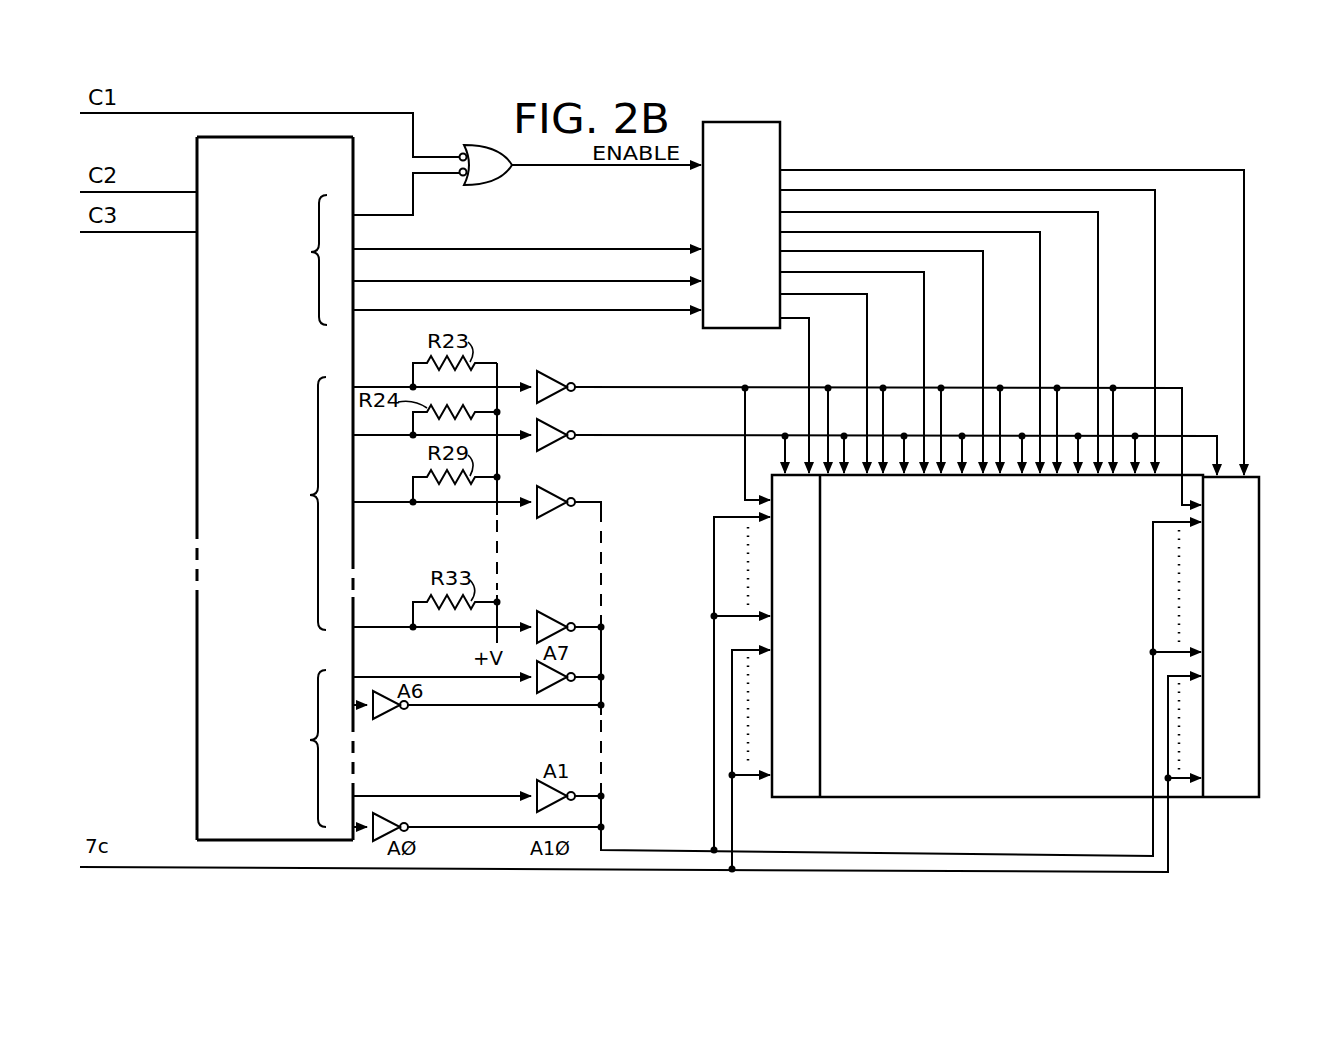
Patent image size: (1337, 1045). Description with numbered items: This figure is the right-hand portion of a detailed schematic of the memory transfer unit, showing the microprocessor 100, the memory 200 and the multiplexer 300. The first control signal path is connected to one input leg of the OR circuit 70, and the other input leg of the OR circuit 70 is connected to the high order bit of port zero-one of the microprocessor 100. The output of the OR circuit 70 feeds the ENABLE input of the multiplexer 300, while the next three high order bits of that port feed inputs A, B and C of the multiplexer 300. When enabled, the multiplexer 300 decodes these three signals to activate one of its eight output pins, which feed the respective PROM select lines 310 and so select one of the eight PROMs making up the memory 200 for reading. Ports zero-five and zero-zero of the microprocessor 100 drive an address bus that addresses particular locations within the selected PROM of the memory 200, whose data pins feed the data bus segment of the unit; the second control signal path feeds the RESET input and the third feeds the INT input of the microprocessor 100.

The OR circuit 70 is at (493, 185).
The microprocessor 100 is at (268, 586).
The memory 200 is at (1023, 663).
The multiplexer 300 is at (760, 224).
The PROM select lines 310 is at (1260, 164).